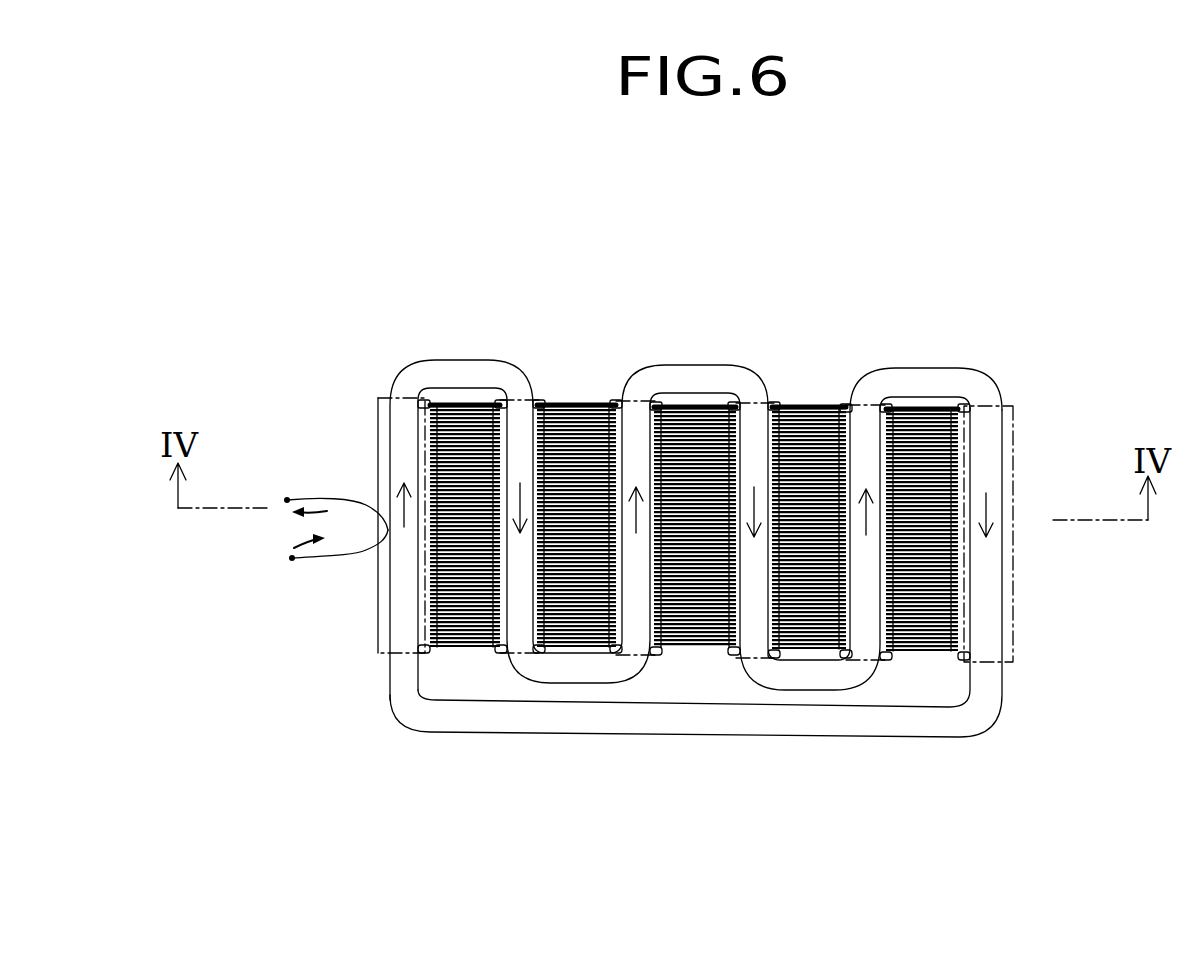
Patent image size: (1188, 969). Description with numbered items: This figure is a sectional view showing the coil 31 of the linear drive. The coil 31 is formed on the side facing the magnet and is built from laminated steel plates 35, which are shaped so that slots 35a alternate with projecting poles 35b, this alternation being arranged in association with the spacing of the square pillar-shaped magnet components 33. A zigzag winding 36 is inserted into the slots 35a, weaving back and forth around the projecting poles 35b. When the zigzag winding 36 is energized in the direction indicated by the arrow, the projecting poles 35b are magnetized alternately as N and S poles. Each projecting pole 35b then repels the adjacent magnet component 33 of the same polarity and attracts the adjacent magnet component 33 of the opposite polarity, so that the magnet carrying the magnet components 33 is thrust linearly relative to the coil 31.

The coil 31 is at (563, 372).
The magnet component 33 is at (378, 405).
The laminated steel plate 35 is at (1003, 502).
The slot 35a is at (496, 652).
The projecting pole 35b is at (463, 408).
The zigzag winding 36 is at (1003, 603).